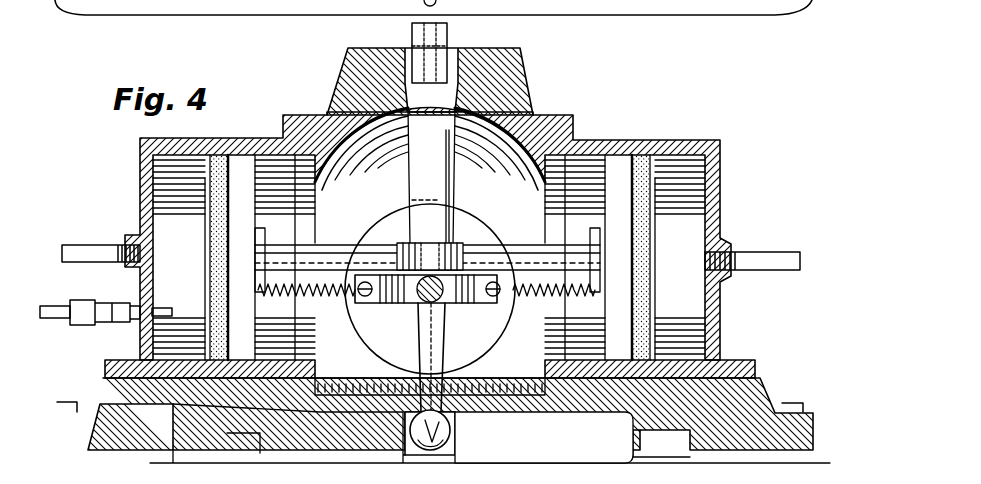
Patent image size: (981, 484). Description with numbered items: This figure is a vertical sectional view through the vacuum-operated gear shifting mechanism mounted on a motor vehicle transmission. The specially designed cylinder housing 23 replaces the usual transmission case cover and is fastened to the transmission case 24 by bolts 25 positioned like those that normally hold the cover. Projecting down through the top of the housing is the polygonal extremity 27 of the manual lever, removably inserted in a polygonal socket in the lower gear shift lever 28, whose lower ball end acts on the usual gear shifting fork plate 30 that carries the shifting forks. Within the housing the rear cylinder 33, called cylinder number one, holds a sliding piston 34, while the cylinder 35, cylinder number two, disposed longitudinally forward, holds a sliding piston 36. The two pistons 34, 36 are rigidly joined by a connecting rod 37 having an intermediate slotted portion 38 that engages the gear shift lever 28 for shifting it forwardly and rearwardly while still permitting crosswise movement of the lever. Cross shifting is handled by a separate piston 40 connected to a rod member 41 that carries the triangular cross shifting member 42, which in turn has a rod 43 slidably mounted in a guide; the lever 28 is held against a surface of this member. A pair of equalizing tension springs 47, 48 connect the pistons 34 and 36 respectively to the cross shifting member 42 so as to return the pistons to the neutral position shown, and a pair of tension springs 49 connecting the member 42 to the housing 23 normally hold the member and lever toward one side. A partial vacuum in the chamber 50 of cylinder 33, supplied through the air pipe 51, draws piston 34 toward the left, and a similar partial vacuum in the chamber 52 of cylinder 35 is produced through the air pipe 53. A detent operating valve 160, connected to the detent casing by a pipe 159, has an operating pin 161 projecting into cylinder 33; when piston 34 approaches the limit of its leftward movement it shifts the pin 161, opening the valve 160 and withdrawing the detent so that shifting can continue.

The cylinder housing 23 is at (340, 82).
The transmission case 24 is at (88, 450).
The bolts 25 is at (62, 402).
The polygonal extremity 27 is at (452, 70).
The gear shift lever 28 is at (431, 176).
The gear shifting fork plate 30 is at (519, 436).
The rear cylinder 33 is at (140, 138).
The piston 34 is at (226, 222).
The cylinder 35 is at (662, 140).
The piston 36 is at (615, 253).
The connecting rod 37 is at (525, 250).
The slotted portion 38 is at (405, 240).
The piston 40 is at (455, 350).
The rod member 41 is at (452, 303).
The cross shifting member 42 is at (405, 292).
The rod 43 is at (410, 362).
The equalizing tension spring 47 is at (285, 296).
The equalizing tension spring 48 is at (573, 296).
The tension springs 49 is at (380, 275).
The chamber 50 is at (160, 192).
The air pipe 51 is at (90, 245).
The chamber 52 is at (695, 224).
The air pipe 53 is at (778, 271).
The pipe 159 is at (45, 306).
The detent operating valve 160 is at (105, 304).
The operating pin 161 is at (163, 308).